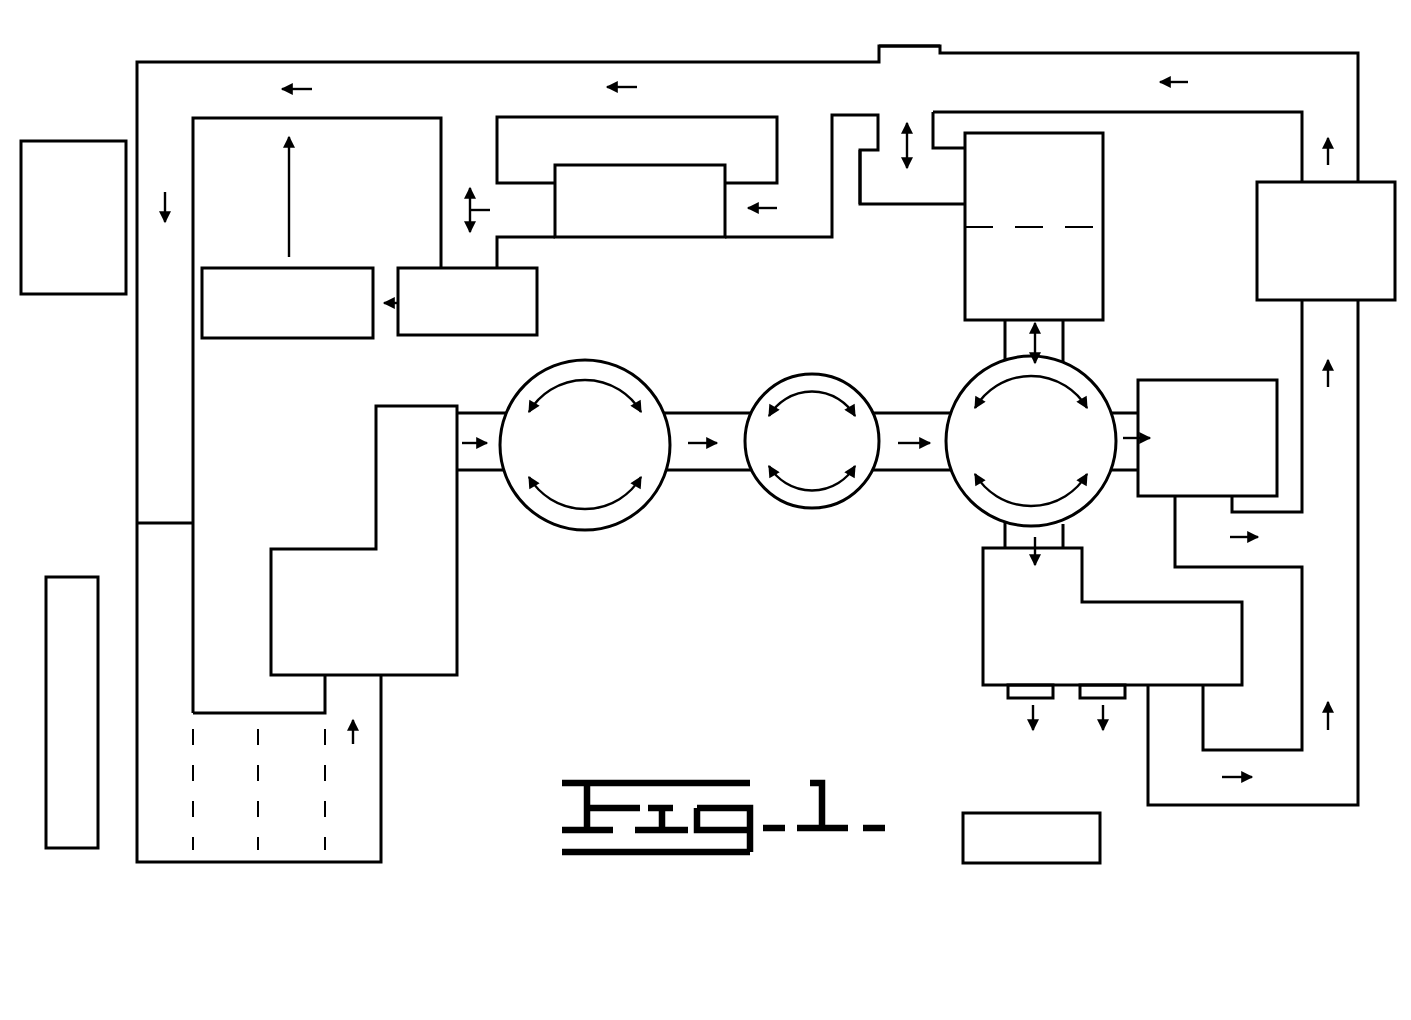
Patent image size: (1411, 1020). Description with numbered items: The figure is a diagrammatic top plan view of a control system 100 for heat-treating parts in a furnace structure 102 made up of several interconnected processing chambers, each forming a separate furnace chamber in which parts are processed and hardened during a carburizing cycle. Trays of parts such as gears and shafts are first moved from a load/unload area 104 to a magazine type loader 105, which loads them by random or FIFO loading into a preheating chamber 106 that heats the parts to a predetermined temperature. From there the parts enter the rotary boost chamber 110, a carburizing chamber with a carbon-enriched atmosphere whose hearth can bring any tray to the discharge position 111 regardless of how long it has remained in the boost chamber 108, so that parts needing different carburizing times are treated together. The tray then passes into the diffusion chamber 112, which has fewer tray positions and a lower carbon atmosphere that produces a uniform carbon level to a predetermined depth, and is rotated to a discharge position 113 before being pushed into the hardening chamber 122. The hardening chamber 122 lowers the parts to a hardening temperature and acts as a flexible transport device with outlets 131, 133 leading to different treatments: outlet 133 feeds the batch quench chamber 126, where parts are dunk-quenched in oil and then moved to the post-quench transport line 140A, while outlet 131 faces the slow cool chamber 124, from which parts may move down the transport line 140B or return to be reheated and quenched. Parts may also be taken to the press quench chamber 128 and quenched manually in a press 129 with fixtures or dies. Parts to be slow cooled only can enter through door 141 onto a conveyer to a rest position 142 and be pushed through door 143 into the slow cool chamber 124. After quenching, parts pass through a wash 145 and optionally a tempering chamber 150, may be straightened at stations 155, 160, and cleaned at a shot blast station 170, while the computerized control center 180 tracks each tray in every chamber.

The control system 100 is at (106, 812).
The furnace structure 102 is at (526, 750).
The load/unload area 104 is at (137, 523).
The magazine type loader 105 is at (382, 770).
The preheating chamber 106 is at (433, 675).
The boost chamber 108 is at (465, 440).
The boost chamber 110 is at (568, 530).
The discharge position 111 is at (674, 440).
The diffusion chamber 112 is at (800, 510).
The discharge position 113 is at (889, 440).
The hardening chamber 122 is at (960, 495).
The slow cool chamber 124 is at (1105, 270).
The batch quench chamber 126 is at (1215, 380).
The press quench chamber 128 is at (982, 664).
The press 129 is at (1100, 830).
The outlet 131 is at (1043, 355).
The outlet 133 is at (1117, 425).
The post-quench transport line 140A is at (1302, 338).
The transport line 140B is at (522, 62).
The door 141 is at (935, 46).
The rest position 142 is at (862, 205).
The door 143 is at (965, 190).
The wash 145 is at (1257, 208).
The tempering chamber 150 is at (645, 240).
The station 155 is at (537, 295).
The station 160 is at (297, 338).
The shot blast station 170 is at (80, 294).
The computerized control center 180 is at (72, 577).